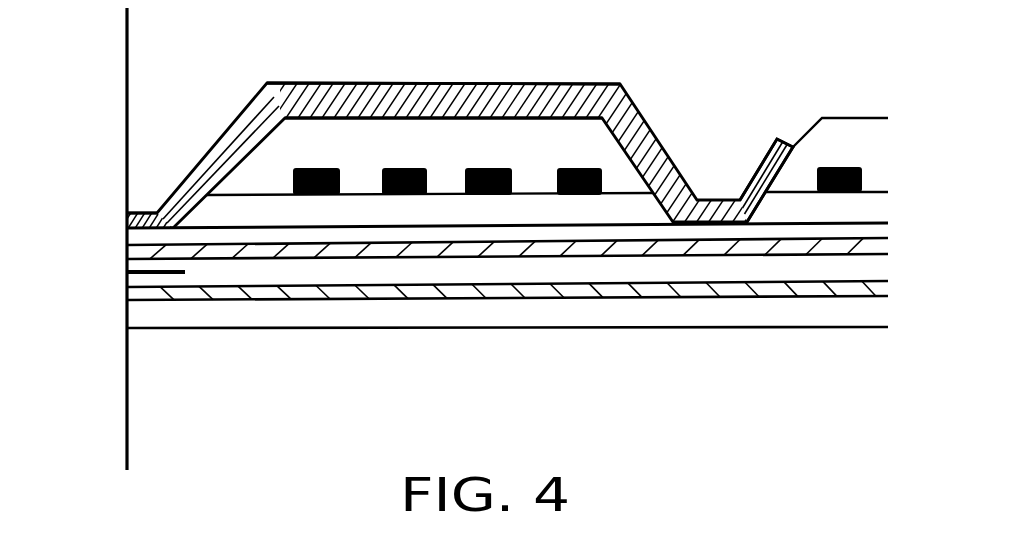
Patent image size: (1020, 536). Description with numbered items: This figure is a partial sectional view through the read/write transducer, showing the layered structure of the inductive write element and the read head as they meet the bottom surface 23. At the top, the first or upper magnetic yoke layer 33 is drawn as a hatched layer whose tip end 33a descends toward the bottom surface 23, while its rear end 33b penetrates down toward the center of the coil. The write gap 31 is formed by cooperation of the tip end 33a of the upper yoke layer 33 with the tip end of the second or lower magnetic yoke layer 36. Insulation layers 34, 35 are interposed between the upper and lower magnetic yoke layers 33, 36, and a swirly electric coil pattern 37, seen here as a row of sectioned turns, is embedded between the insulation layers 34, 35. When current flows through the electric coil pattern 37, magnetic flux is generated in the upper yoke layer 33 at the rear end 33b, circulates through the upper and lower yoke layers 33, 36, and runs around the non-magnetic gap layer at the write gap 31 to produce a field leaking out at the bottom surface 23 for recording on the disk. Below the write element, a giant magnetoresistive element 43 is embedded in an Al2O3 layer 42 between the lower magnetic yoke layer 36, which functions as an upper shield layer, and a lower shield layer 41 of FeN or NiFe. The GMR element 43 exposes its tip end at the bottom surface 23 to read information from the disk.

The bottom surface 23 is at (127, 68).
The write gap 31 is at (114, 237).
The upper magnetic yoke layer 33 is at (221, 144).
The tip end of upper magnetic yoke layer 33a is at (140, 212).
The rear end of upper magnetic yoke layer 33b is at (700, 197).
The insulation layer 34 is at (588, 135).
The insulation layer 35 is at (617, 210).
The lower magnetic yoke layer 36 is at (127, 258).
The electric coil pattern 37 is at (392, 168).
The lower shield layer 41 is at (127, 293).
The Al2O3 layer 42 is at (238, 273).
The GMR element 43 is at (163, 277).